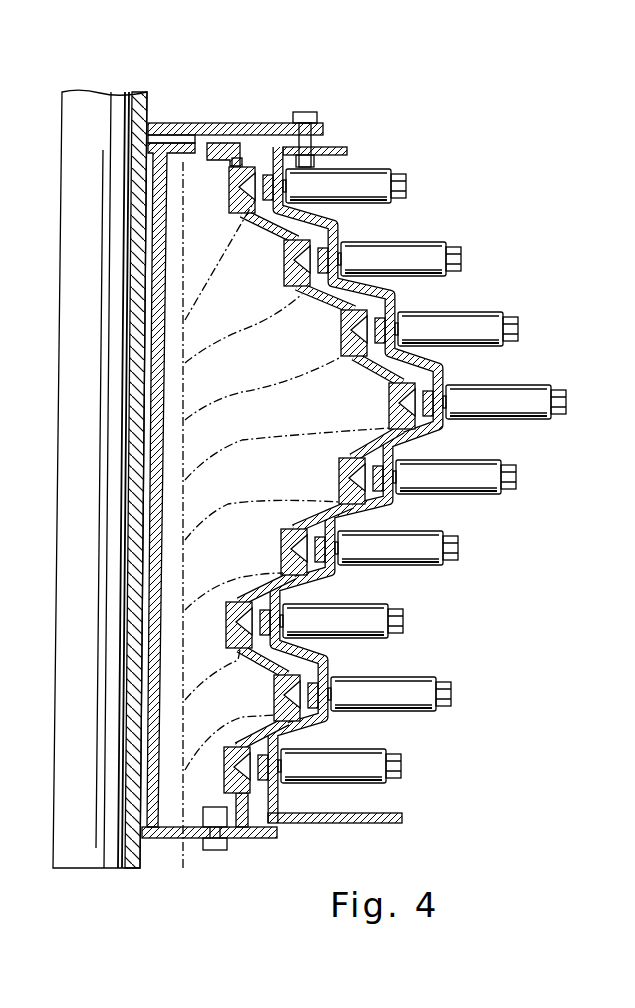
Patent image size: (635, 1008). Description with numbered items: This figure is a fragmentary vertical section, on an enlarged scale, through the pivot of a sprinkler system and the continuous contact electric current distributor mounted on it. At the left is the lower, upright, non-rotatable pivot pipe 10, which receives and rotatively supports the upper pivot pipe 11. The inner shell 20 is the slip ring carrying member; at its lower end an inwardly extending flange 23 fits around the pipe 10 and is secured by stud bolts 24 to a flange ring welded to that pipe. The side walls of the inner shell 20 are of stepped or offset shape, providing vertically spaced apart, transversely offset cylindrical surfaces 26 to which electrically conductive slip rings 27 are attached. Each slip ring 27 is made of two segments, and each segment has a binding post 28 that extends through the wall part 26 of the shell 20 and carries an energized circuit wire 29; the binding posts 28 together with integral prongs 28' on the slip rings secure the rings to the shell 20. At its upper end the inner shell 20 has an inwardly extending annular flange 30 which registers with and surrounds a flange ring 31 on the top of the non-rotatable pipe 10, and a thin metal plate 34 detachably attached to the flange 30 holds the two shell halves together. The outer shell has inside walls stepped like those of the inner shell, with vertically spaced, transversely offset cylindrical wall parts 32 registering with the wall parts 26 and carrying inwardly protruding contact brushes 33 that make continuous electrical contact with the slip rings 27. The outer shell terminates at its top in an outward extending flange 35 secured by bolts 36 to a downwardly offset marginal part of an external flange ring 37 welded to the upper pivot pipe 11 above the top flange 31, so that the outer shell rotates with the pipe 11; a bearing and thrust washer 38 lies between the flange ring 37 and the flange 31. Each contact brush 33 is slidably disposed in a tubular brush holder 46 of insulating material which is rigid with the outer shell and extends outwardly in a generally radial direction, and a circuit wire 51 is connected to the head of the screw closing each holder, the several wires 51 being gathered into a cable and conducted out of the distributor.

The pivot pipe 10 is at (162, 389).
The upper pivot pipe 11 is at (149, 101).
The inner shell 20 is at (330, 362).
The inwardly extending flange 23 is at (232, 787).
The stud bolts 24 is at (228, 851).
The cylindrical surfaces 26 is at (300, 271).
The slip rings 27 is at (345, 239).
The binding post 28 is at (306, 455).
The integral prongs 28' is at (291, 487).
The energized circuit wire 29 is at (284, 384).
The annular flange 30 is at (218, 162).
The flange ring 31 is at (244, 204).
The cylindrical wall parts 32 is at (445, 426).
The contact brushes 33 is at (432, 394).
The thin metal plate 34 is at (226, 146).
The outward extending flange 35 is at (348, 152).
The bolts 36 is at (312, 115).
The external flange ring 37 is at (330, 132).
The bearing and thrust washer 38 is at (181, 128).
The tubular brush holder 46 is at (490, 492).
The circuit wire 51 is at (455, 247).